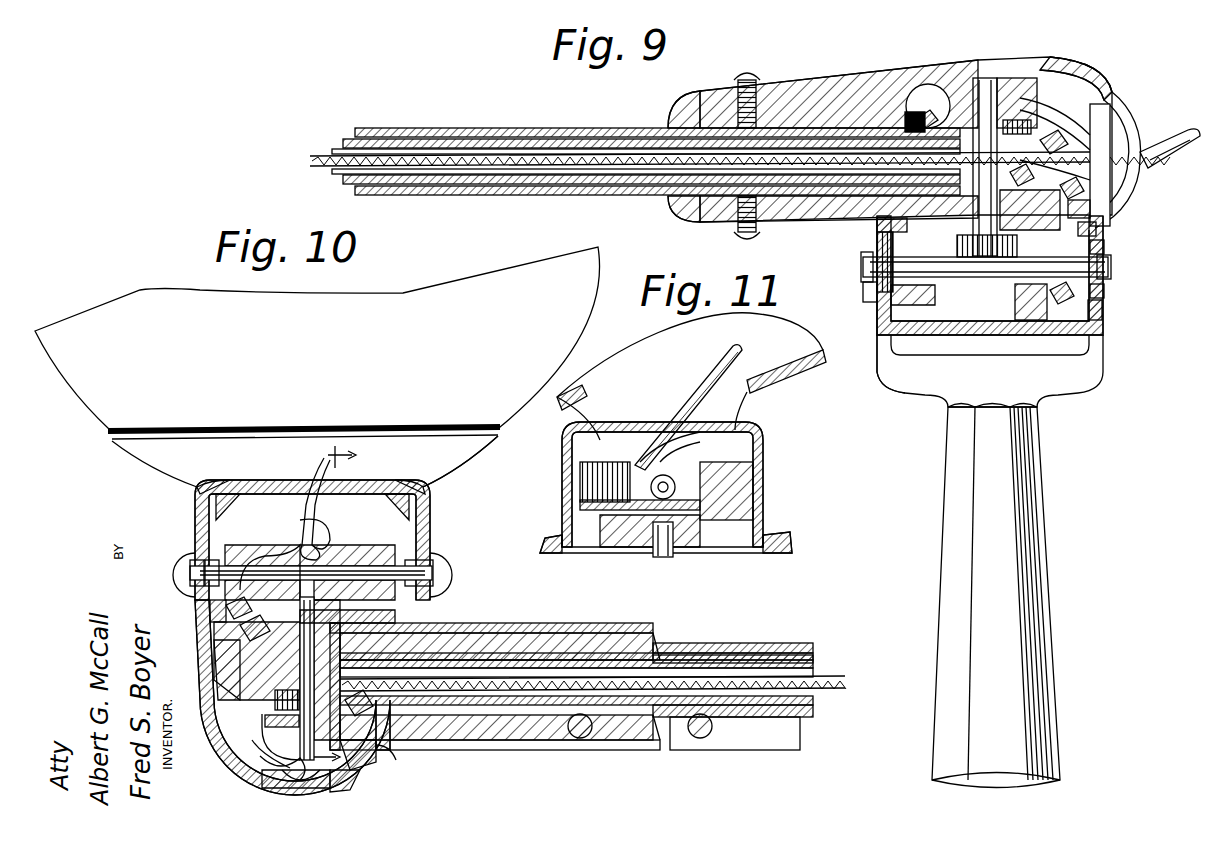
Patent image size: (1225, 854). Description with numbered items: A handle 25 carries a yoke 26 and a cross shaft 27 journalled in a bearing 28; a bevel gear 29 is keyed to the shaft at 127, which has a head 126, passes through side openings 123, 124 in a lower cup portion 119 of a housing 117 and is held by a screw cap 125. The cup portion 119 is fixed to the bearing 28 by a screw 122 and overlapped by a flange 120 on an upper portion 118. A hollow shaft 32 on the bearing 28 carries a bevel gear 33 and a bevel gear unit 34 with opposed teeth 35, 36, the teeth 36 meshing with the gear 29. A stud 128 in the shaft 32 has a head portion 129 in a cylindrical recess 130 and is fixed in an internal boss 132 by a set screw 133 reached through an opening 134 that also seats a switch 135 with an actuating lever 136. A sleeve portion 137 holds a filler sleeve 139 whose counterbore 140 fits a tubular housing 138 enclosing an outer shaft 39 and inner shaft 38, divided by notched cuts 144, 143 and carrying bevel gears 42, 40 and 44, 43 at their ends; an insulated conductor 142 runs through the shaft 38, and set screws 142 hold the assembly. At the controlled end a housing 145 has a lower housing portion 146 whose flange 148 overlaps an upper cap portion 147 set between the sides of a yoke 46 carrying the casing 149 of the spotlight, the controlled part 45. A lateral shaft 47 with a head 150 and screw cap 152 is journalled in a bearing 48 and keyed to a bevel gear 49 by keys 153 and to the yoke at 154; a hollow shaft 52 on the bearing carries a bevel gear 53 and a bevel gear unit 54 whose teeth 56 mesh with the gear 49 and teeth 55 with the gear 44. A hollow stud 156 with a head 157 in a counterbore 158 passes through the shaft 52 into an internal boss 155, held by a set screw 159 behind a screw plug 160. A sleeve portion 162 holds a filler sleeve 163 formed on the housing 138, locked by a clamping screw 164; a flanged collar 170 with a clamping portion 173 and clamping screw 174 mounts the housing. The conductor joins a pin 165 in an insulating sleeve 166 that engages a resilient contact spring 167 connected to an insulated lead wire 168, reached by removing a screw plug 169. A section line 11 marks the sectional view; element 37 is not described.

In FIG. 10, the section line 11 is at (338, 606).
In FIG. 9, the manually operable handle 25 is at (1040, 582).
In FIG. 9, the yoke 26 is at (1104, 312).
In FIG. 9, the shaft 27 is at (1012, 278).
In FIG. 9, the bearing 28 is at (900, 300).
In FIG. 9, the bevel gear 29 is at (1098, 230).
In FIG. 9, the second shaft 32 is at (878, 245).
In FIG. 9, the bevel gear 33 is at (1068, 140).
In FIG. 9, the bevel gear unit 34 is at (1082, 196).
In FIG. 9, the teeth 35 is at (1060, 186).
In FIG. 9, the teeth 36 is at (1098, 210).
In FIG. 9, the outer tube 37 is at (398, 128).
In FIG. 10, the outer tube 37 is at (808, 722).
In FIG. 9, the inner shaft 38 is at (458, 196).
In FIG. 10, the inner shaft 38 is at (815, 700).
In FIG. 9, the outer shaft 39 is at (470, 139).
In FIG. 10, the outer shaft 39 is at (815, 655).
In FIG. 9, the bevel gear 40 is at (938, 84).
In FIG. 9, the bevel gear 42 is at (920, 86).
In FIG. 10, the bevel gear 43 is at (378, 765).
In FIG. 10, the bevel gear 44 is at (398, 760).
In FIG. 10, the controlled part 45 is at (470, 455).
In FIG. 11, the controlled part 45 is at (798, 385).
In FIG. 10, the yoke 46 is at (430, 496).
In FIG. 10, the shaft 47 is at (410, 535).
In FIG. 11, the shaft 47 is at (690, 445).
In FIG. 10, the bearing 48 is at (420, 515).
In FIG. 11, the bearing 48 is at (753, 470).
In FIG. 10, the bevel gear 49 is at (210, 612).
In FIG. 10, the shaft 52 is at (290, 680).
In FIG. 11, the shaft 52 is at (660, 556).
In FIG. 10, the bevel gear 53 is at (275, 700).
In FIG. 10, the bevel gear unit 54 is at (395, 628).
In FIG. 10, the teeth 55 is at (240, 640).
In FIG. 10, the teeth 56 is at (445, 578).
In FIG. 11, the teeth 56 is at (720, 525).
In FIG. 9, the housing 117 is at (1074, 70).
In FIG. 9, the upper housing portion 118 is at (838, 75).
In FIG. 9, the lower cup portion 119 is at (1076, 300).
In FIG. 9, the flange 120 is at (880, 226).
In FIG. 9, the screw 122 is at (930, 330).
In FIG. 9, the side opening 123 is at (866, 280).
In FIG. 9, the side opening 124 is at (1110, 278).
In FIG. 9, the screw cap 125 is at (892, 296).
In FIG. 9, the head 126 is at (1112, 264).
In FIG. 9, the key 127 is at (1106, 247).
In FIG. 9, the stud 128 is at (1016, 78).
In FIG. 9, the head portion 129 is at (990, 257).
In FIG. 9, the cylindrical recess 130 is at (965, 322).
In FIG. 9, the internal boss 132 is at (984, 78).
In FIG. 9, the set screw 133 is at (1020, 120).
In FIG. 9, the opening 134 is at (1100, 110).
In FIG. 9, the switch 135 is at (1110, 176).
In FIG. 9, the actuating lever 136 is at (1193, 130).
In FIG. 9, the sleeve portion 137 is at (690, 224).
In FIG. 9, the tubular housing 138 is at (560, 128).
In FIG. 10, the tubular housing 138 is at (766, 660).
In FIG. 9, the filler sleeve 139 is at (688, 94).
In FIG. 9, the counterbore 140 is at (800, 90).
In FIG. 9, the insulated conductor 142 is at (748, 78).
In FIG. 10, the insulated conductor 142 is at (820, 680).
In FIG. 9, the notched cut 143 is at (628, 186).
In FIG. 9, the notched cut 144 is at (572, 176).
In FIG. 10, the housing 145 is at (282, 772).
In FIG. 10, the lower housing portion 146 is at (528, 623).
In FIG. 10, the upper cap portion 147 is at (198, 505).
In FIG. 11, the upper cap portion 147 is at (763, 438).
In FIG. 10, the flange 148 is at (230, 615).
In FIG. 10, the casing 149 is at (408, 314).
In FIG. 11, the casing 149 is at (640, 356).
In FIG. 10, the head 150 is at (182, 570).
In FIG. 10, the screw cap 152 is at (400, 560).
In FIG. 10, the keys 153 is at (200, 525).
In FIG. 10, the key 154 is at (208, 545).
In FIG. 10, the internal boss 155 is at (262, 740).
In FIG. 10, the hollow stud 156 is at (268, 720).
In FIG. 10, the head 157 is at (433, 568).
In FIG. 10, the counterbore 158 is at (285, 545).
In FIG. 10, the set screw 159 is at (270, 740).
In FIG. 10, the screw plug 160 is at (218, 664).
In FIG. 10, the sleeve portion 162 is at (638, 752).
In FIG. 10, the filler sleeve 163 is at (580, 640).
In FIG. 10, the clamping screw 164 is at (580, 740).
In FIG. 10, the pin 165 is at (265, 765).
In FIG. 10, the insulating sleeve 166 is at (352, 792).
In FIG. 10, the resilient contact spring 167 is at (335, 530).
In FIG. 11, the resilient contact spring 167 is at (580, 487).
In FIG. 10, the insulated lead wire 168 is at (332, 480).
In FIG. 11, the insulated lead wire 168 is at (718, 366).
In FIG. 10, the removable screw plug 169 is at (300, 792).
In FIG. 10, the flanged collar 170 is at (722, 643).
In FIG. 10, the clamping portion 173 is at (780, 750).
In FIG. 10, the clamping screw 174 is at (700, 740).